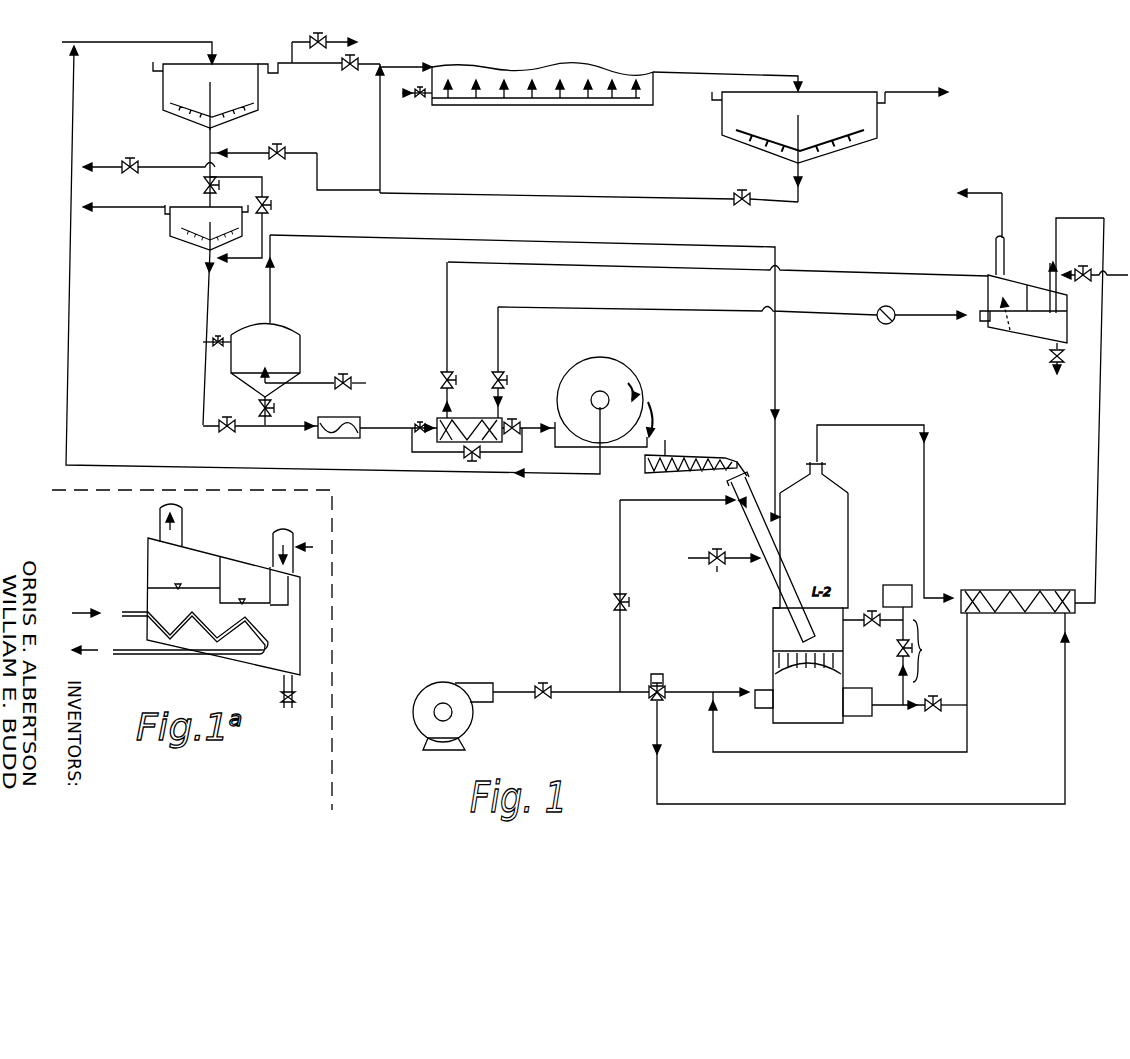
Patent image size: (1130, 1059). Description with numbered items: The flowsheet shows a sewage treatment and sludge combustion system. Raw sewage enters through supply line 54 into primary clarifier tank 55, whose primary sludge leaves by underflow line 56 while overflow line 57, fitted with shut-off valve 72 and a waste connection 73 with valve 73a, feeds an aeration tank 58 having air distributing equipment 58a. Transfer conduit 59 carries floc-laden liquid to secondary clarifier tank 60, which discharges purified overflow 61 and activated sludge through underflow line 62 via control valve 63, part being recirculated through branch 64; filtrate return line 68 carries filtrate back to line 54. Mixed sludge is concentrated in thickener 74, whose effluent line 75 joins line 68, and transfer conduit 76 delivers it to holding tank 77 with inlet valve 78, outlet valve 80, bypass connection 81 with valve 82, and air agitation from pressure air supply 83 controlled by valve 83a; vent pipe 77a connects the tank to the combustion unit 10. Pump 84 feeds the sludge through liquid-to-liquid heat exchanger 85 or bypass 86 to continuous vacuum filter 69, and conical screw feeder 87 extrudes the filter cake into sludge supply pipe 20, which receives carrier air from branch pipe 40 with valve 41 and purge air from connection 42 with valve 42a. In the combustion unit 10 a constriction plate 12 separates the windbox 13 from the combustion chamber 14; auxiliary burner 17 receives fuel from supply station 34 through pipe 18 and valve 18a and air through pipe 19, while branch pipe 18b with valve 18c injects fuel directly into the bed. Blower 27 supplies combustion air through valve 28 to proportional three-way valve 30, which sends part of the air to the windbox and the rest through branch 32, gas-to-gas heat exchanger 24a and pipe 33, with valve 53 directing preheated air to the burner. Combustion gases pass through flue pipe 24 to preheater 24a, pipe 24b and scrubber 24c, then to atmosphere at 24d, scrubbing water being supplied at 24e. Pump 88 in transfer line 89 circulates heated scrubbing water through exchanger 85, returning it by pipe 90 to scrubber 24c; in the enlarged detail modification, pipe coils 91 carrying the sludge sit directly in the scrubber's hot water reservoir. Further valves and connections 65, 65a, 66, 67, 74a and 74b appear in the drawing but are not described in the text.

In FIG. 1, the combustion unit 10 is at (850, 527).
In FIG. 1, the constriction plate 12 is at (827, 683).
In FIG. 1, the windbox 13 is at (817, 697).
In FIG. 1, the combustion chamber 14 is at (820, 524).
In FIG. 1, the auxiliary burner 17 is at (870, 694).
In FIG. 1, the pipe 18 is at (929, 651).
In FIG. 1, the control valve 18a is at (893, 650).
In FIG. 1, the branch pipe 18b is at (880, 628).
In FIG. 1, the control valve 18c is at (866, 612).
In FIG. 1, the pipe 19 is at (878, 707).
In FIG. 1, the sludge supply pipe 20 is at (783, 574).
In FIG. 1, the flue duct or pipe 24 is at (930, 485).
In FIG. 1, the gas-to-gas heat exchanger 24a is at (1032, 590).
In FIG. 1, the pipe 24b is at (1099, 446).
In FIG. 1, the dust or ash scrubber 24c is at (984, 300).
In FIG. 1, the atmospheric release 24d is at (1004, 206).
In FIG. 1, the scrubbing water supply 24e is at (1084, 266).
In FIG. 1, the blower 27 is at (440, 682).
In FIG. 1, the main discharge control valve 28 is at (552, 702).
In FIG. 1, the proportional three-way valve 30 is at (668, 686).
In FIG. 1, the delivery branch 32 is at (707, 803).
In FIG. 1, the pipe 33 is at (834, 760).
In FIG. 1, the supply station 34 is at (890, 585).
In FIG. 1, the branch pipe 40 is at (614, 542).
In FIG. 1, the control valve 41 is at (632, 600).
In FIG. 1, the high pressure purge air connection 42 is at (700, 552).
In FIG. 1, the control valve 42a is at (717, 567).
In FIG. 1, the valve 53 is at (940, 713).
In FIG. 1, the supply line 54 is at (104, 48).
In FIG. 1, the primary clarifier tank 55 is at (160, 98).
In FIG. 1, the underflow line 56 is at (208, 134).
In FIG. 1, the overflow line 57 is at (308, 66).
In FIG. 1, the aeration tank 58 is at (564, 102).
In FIG. 1, the air distributing equipment 58a is at (410, 97).
In FIG. 1, the transfer conduit 59 is at (705, 77).
In FIG. 1, the secondary final clarifier tank 60 is at (716, 110).
In FIG. 1, the overflow 61 is at (917, 100).
In FIG. 1, the underflow line 62 is at (578, 197).
In FIG. 1, the control valve 63 is at (743, 210).
In FIG. 1, the branch 64 is at (382, 170).
In FIG. 1, the valve 65 is at (300, 151).
In FIG. 1, the line 65a is at (256, 147).
In FIG. 1, the valve 66 is at (168, 178).
In FIG. 1, the valve 67 is at (120, 163).
In FIG. 1, the filtrate return line 68 is at (108, 240).
In FIG. 1, the continuous vacuum filter 69 is at (640, 390).
In FIG. 1, the control and shut-off valve 72 is at (366, 62).
In FIG. 1, the waste connection 73 is at (290, 48).
In FIG. 1, the valve 73a is at (337, 59).
In FIG. 1, the thickener 74 is at (178, 243).
In FIG. 1, the line 74a is at (264, 190).
In FIG. 1, the valve 74b is at (268, 208).
In FIG. 1, the effluent line 75 is at (128, 208).
In FIG. 1, the transfer conduit 76 is at (209, 295).
In FIG. 1, the holding tank 77 is at (298, 347).
In FIG. 1, the vent pipe 77a is at (456, 240).
In FIG. 1, the control valve 78 is at (265, 285).
In FIG. 1, the control valve 80 is at (272, 411).
In FIG. 1, the bypass connection 81 is at (200, 383).
In FIG. 1, the control valve 82 is at (232, 433).
In FIG. 1, the pressure air supply 83 is at (314, 386).
In FIG. 1, the valve 83a is at (354, 381).
In FIG. 1, the pump 84 is at (345, 418).
In FIG. 1, the liquid-to-liquid heat exchanger 85 is at (487, 418).
In FIG. 1, the bypass 86 is at (412, 446).
In FIG. 1, the conical screw feeder 87 is at (696, 454).
In FIG. 1, the pump 88 is at (887, 326).
In FIG. 1, the transfer line 89 is at (825, 314).
In FIG. 1, the pipe 90 is at (856, 273).
In FIG. 1A, the pipe coils 91 is at (200, 630).